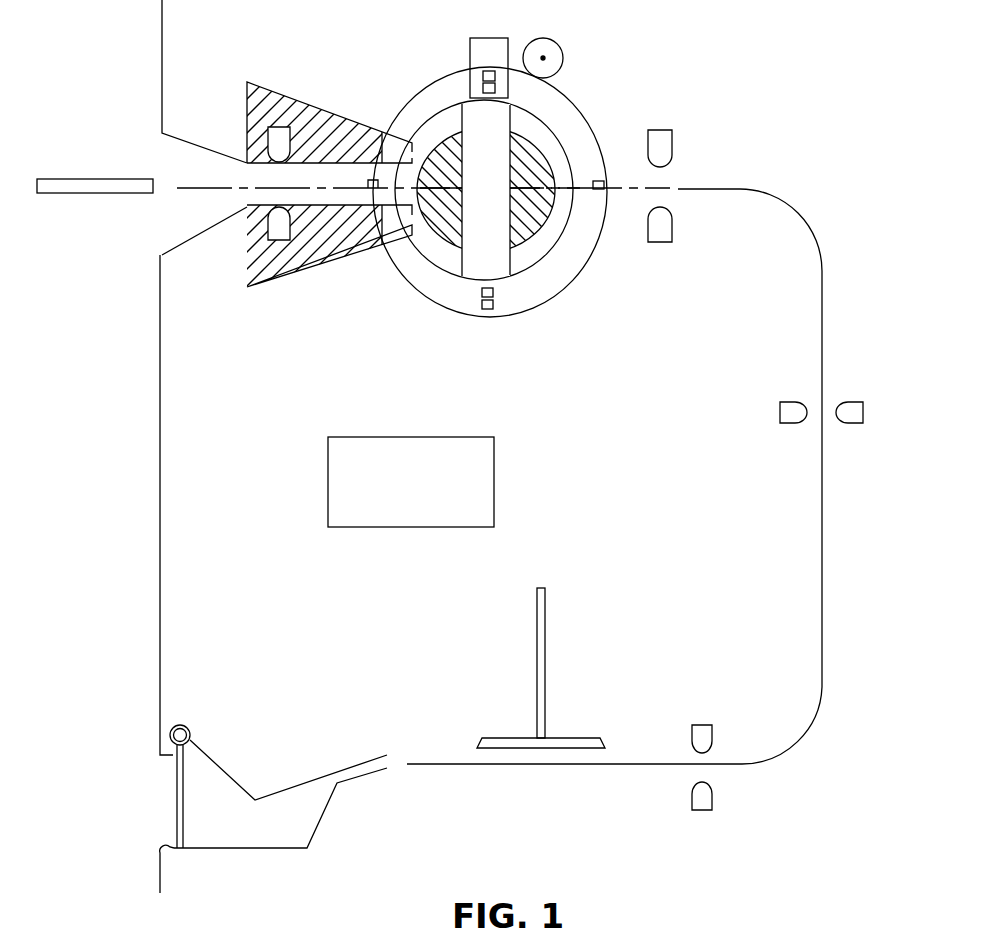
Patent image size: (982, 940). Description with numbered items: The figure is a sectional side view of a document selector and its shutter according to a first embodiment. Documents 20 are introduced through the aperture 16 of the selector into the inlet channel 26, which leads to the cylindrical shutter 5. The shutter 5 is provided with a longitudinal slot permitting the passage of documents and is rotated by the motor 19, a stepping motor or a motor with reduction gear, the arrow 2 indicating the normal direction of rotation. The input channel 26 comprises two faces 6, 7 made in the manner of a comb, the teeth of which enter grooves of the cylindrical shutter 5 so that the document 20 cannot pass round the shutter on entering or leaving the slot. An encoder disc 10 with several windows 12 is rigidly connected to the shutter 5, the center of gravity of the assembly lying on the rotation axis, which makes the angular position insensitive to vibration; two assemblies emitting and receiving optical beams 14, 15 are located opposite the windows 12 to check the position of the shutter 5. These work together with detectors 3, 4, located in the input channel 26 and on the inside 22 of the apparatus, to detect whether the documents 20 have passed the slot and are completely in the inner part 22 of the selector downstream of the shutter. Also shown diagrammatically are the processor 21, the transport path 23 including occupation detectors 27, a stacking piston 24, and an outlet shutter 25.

The arrow 2 is at (445, 30).
The detector 3 is at (267, 225).
The detector 4 is at (672, 143).
The cylindrical shutter 5 is at (587, 143).
The face of the input channel 6 is at (340, 162).
The face of the input channel 7 is at (297, 197).
The encoder disc 10 is at (573, 100).
The windows 12 is at (599, 190).
The assembly emitting and receiving optical beams 14 is at (482, 304).
The assembly emitting and receiving optical beams 15 is at (482, 292).
The aperture 16 is at (185, 168).
The motor 19 is at (557, 44).
The document 20 is at (98, 193).
The processor 21 is at (411, 482).
The inner part of the selector 22 is at (660, 183).
The transport path 23 is at (822, 325).
The stacking piston 24 is at (502, 737).
The outlet shutter 25 is at (177, 797).
The inlet channel 26 is at (348, 198).
The occupation detectors 27 is at (790, 425).